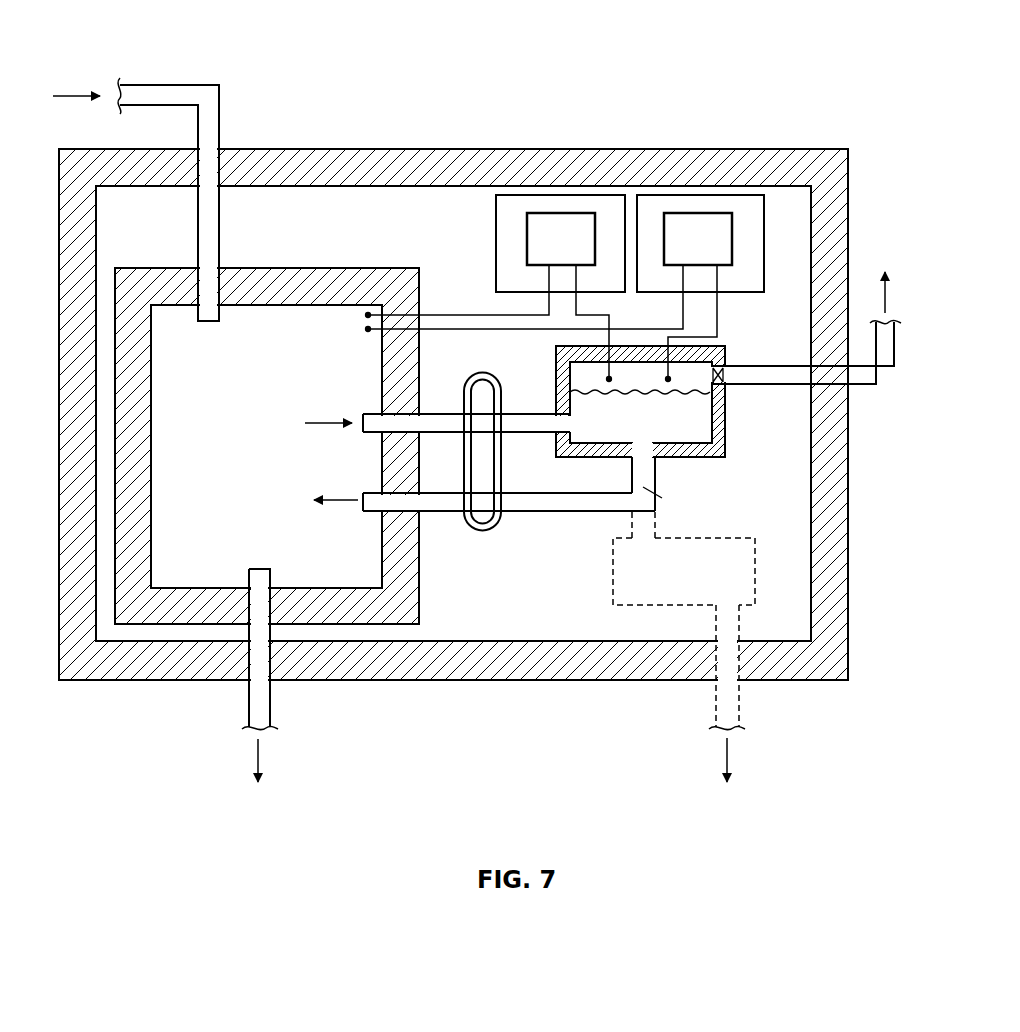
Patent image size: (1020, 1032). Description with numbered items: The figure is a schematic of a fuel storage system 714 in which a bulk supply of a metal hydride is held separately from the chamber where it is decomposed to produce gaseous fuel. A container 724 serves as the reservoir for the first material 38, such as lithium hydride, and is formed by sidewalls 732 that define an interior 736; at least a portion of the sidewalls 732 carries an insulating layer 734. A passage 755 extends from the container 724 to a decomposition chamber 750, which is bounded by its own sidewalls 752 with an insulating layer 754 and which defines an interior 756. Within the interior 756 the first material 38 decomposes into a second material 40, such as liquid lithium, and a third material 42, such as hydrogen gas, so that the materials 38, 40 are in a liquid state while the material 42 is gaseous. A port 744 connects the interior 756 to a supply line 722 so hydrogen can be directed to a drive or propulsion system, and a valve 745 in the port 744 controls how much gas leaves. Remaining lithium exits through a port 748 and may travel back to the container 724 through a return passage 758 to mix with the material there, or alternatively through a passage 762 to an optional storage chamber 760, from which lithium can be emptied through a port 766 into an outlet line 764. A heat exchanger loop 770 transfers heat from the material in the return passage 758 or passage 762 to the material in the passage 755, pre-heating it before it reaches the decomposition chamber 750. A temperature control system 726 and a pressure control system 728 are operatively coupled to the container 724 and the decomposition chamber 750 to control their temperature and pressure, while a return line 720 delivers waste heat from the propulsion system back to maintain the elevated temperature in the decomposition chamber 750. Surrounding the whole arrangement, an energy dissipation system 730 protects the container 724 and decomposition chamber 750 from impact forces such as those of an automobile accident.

The fuel storage system 714 is at (766, 60).
The return line 720 is at (208, 290).
The supply line 722 is at (866, 390).
The container 724 is at (295, 268).
The temperature control system 726 is at (725, 195).
The pressure control system 728 is at (539, 195).
The energy dissipation system 730 is at (380, 150).
The sidewalls 732 is at (342, 275).
The insulating layer 734 is at (402, 282).
The interior 736 is at (371, 578).
The port 744 is at (710, 378).
The valve 745 is at (724, 378).
The port 748 is at (645, 448).
The decomposition chamber 750 is at (690, 452).
The sidewalls 752 is at (728, 430).
The insulating layer 754 is at (732, 455).
The passage 755 is at (437, 428).
The interior 756 is at (592, 405).
The return passage 758 is at (566, 513).
The storage chamber 760 is at (636, 607).
The passage 762 is at (632, 540).
The outlet line 764 is at (725, 702).
The port 766 is at (736, 603).
The heat exchanger loop 770 is at (482, 533).
The third material 42 is at (588, 378).
The first material 38 is at (465, 518).
The second material 40 is at (175, 575).